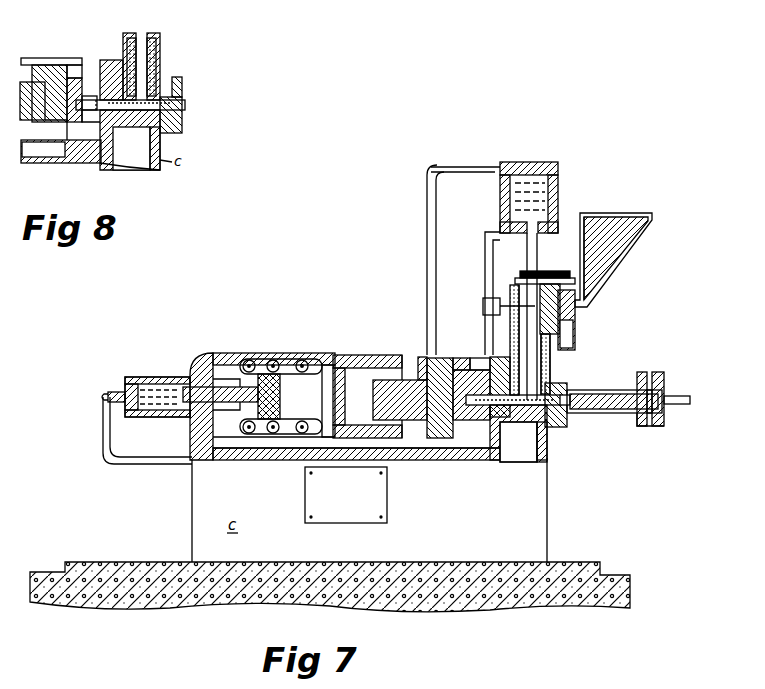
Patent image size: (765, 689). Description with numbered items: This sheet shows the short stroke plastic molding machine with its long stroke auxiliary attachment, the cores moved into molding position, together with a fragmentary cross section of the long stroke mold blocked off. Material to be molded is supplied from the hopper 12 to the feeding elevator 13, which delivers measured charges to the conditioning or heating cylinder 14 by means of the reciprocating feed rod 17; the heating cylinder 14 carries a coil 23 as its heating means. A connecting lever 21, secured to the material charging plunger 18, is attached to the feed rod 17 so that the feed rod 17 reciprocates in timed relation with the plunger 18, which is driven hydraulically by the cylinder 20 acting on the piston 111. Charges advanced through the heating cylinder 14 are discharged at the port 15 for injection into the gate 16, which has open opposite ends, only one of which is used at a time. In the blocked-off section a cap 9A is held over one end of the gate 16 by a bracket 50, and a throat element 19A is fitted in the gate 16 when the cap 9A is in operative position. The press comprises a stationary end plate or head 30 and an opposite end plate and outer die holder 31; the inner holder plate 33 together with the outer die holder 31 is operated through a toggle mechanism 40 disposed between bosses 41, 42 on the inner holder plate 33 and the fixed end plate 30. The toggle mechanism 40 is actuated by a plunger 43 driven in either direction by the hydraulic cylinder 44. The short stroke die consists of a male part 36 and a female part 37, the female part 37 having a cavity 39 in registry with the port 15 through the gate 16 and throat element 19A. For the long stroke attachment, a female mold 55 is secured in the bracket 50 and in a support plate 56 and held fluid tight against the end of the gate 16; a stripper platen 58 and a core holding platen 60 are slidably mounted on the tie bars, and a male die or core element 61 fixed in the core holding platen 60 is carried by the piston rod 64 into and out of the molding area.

In FIG. 8, the cap 9A is at (185, 102).
In FIG. 7, the cap 9A is at (513, 400).
In FIG. 7, the hopper 12 is at (622, 262).
In FIG. 7, the feeding elevator 13 is at (575, 340).
In FIG. 8, the conditioning or heating cylinder 14 is at (158, 70).
In FIG. 7, the conditioning or heating cylinder 14 is at (560, 378).
In FIG. 8, the port 15 is at (160, 138).
In FIG. 7, the port 15 is at (548, 432).
In FIG. 8, the gate 16 is at (130, 140).
In FIG. 7, the gate 16 is at (518, 442).
In FIG. 7, the reciprocating feed rod 17 is at (578, 322).
In FIG. 7, the material charging plunger 18 is at (527, 248).
In FIG. 8, the throat element 19A is at (98, 112).
In FIG. 7, the cylinder 20 is at (558, 182).
In FIG. 7, the connecting lever 21 is at (552, 272).
In FIG. 8, the coil 23 is at (160, 45).
In FIG. 7, the coil 23 is at (560, 362).
In FIG. 7, the stationary end plate or head 30 is at (213, 355).
In FIG. 8, the outer die holder 31 is at (47, 63).
In FIG. 7, the outer die holder 31 is at (440, 358).
In FIG. 7, the inner holder plate 33 is at (345, 357).
In FIG. 8, the male part 36 is at (73, 78).
In FIG. 7, the male part 36 is at (461, 370).
In FIG. 8, the female part 37 is at (93, 112).
In FIG. 7, the female part 37 is at (479, 372).
In FIG. 7, the cavity 39 is at (505, 430).
In FIG. 7, the toggle mechanism 40 is at (276, 338).
In FIG. 7, the boss 41 is at (318, 362).
In FIG. 7, the boss 42 is at (252, 360).
In FIG. 7, the plunger 43 is at (185, 386).
In FIG. 7, the hydraulic cylinder 44 is at (155, 412).
In FIG. 8, the bracket 50 is at (182, 124).
In FIG. 7, the bracket 50 is at (568, 418).
In FIG. 7, the female mold 55 is at (628, 415).
In FIG. 7, the support plate 56 is at (640, 370).
In FIG. 7, the stripper platen 58 is at (645, 372).
In FIG. 7, the core holding platen 60 is at (661, 372).
In FIG. 7, the male die or core element 61 is at (613, 392).
In FIG. 7, the piston rod 64 is at (672, 396).
In FIG. 7, the piston 111 is at (510, 214).